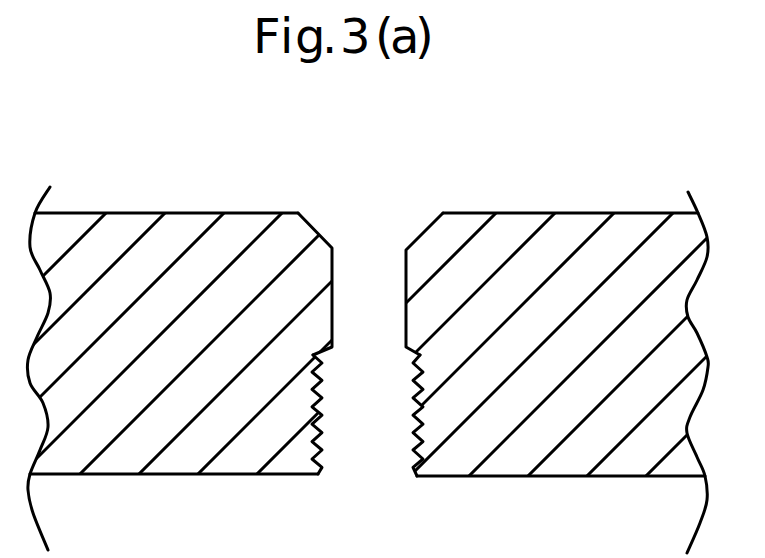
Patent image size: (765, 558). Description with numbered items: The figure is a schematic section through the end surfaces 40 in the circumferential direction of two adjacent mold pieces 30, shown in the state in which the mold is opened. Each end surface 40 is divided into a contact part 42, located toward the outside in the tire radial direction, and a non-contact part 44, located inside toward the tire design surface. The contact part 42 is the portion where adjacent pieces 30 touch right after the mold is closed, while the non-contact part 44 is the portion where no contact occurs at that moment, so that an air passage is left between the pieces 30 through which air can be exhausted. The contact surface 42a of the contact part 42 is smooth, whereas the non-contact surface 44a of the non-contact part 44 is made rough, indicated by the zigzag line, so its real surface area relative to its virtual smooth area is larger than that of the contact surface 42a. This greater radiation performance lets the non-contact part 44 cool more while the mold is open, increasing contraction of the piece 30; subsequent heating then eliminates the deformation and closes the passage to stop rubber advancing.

The piece 30 is at (127, 457).
The end surface 40 is at (391, 364).
The contact part 42 is at (313, 232).
The contact surface 42a is at (406, 290).
The non-contact part 44 is at (302, 463).
The non-contact surface 44a is at (414, 423).